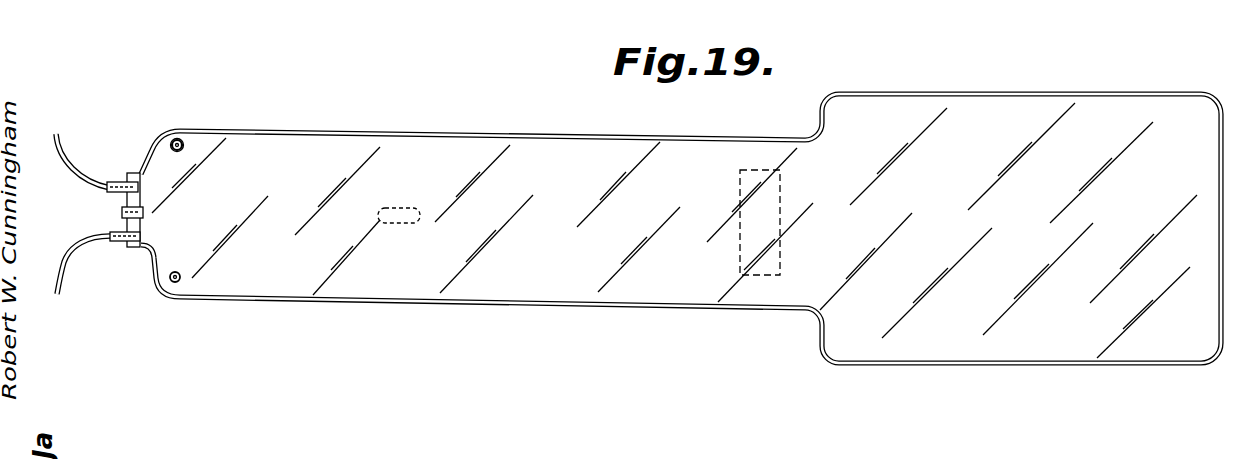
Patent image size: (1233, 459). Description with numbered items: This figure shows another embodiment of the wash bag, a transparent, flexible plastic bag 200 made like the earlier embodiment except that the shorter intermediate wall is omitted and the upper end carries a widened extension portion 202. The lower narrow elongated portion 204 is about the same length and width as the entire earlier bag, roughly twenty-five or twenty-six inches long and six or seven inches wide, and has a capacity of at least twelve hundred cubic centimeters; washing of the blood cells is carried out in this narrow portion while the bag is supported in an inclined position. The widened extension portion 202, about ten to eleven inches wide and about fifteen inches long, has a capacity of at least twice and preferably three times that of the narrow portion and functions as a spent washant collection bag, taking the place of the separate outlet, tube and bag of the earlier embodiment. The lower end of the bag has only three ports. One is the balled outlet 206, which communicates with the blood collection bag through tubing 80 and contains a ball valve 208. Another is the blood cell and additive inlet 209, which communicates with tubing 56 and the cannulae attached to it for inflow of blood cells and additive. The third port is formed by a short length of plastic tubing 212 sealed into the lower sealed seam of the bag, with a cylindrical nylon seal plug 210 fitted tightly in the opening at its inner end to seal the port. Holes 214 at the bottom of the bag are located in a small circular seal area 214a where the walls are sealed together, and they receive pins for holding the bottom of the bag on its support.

The wash bag 200 is at (497, 308).
The widened extension portion 202 is at (925, 363).
The lower narrow elongated portion 204 is at (560, 160).
The balled outlet 206 is at (145, 169).
The ball valve 208 is at (140, 186).
The blood cell and additive inlet 209 is at (153, 273).
The cylindrical nylon seal plug 210 is at (145, 212).
The short length of plastic tubing 212 is at (127, 196).
The holes 214 is at (181, 139).
The small circular seal area 214a is at (186, 147).
The tubing 80 is at (63, 143).
The tubing 56 is at (68, 272).